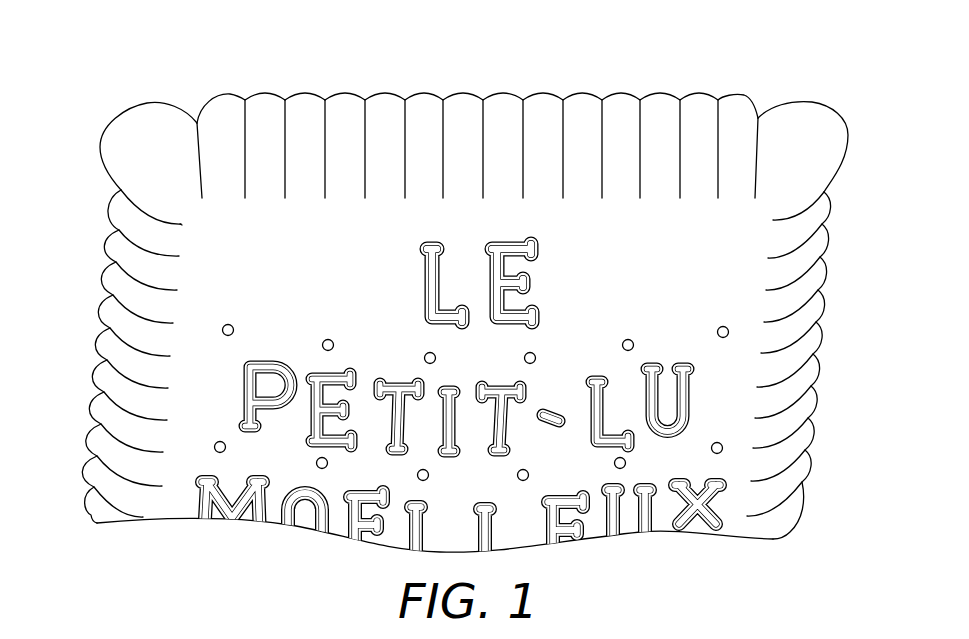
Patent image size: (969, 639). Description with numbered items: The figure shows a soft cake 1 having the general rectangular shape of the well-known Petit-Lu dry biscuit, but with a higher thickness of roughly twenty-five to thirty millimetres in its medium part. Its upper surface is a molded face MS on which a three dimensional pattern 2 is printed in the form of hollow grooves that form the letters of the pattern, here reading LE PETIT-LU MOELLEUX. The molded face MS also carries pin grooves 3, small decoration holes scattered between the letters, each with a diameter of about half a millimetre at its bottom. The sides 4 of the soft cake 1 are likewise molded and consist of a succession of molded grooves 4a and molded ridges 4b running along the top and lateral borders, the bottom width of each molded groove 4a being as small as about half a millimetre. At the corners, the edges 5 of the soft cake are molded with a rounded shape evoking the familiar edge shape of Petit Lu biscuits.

The soft cake 1 is at (647, 62).
The three dimensional pattern 2 is at (540, 245).
The pin grooves 3 is at (629, 340).
The sides 4 is at (465, 88).
The molded grooves 4a is at (305, 99).
The molded ridges 4b is at (325, 98).
The edges 5 is at (113, 148).
The molded face MS is at (216, 272).